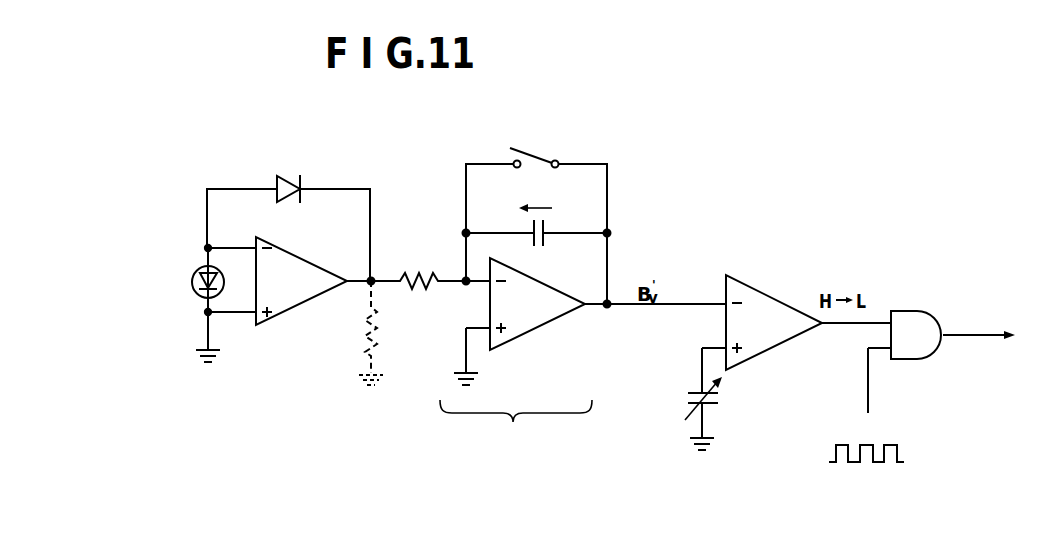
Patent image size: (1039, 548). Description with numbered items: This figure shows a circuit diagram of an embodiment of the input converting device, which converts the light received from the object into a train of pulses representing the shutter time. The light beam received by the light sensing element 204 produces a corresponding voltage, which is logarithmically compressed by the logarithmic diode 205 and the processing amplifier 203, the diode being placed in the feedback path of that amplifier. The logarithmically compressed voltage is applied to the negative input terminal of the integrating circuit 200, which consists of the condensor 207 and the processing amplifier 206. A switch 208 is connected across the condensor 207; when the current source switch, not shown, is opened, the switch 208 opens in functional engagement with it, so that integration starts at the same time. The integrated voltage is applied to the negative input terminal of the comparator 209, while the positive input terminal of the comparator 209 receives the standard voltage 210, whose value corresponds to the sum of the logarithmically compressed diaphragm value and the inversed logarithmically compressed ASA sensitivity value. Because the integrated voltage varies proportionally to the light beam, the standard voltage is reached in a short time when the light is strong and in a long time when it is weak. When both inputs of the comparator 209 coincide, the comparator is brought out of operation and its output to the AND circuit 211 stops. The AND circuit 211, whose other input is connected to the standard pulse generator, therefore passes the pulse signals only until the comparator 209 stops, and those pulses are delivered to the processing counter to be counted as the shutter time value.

The integrating circuit 200 is at (516, 431).
The processing amplifier 203 is at (299, 307).
The light sensing element 204 is at (190, 281).
The logarithmic diode 205 is at (292, 177).
The processing amplifier 206 is at (528, 335).
The condensor 207 is at (548, 238).
The switch 208 is at (535, 155).
The comparator 209 is at (778, 298).
The standard voltage 210 is at (693, 400).
The AND circuit 211 is at (920, 311).